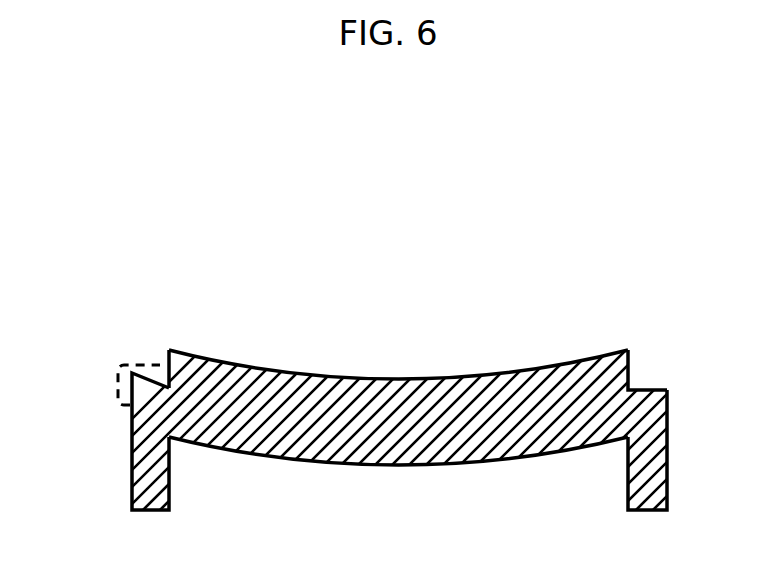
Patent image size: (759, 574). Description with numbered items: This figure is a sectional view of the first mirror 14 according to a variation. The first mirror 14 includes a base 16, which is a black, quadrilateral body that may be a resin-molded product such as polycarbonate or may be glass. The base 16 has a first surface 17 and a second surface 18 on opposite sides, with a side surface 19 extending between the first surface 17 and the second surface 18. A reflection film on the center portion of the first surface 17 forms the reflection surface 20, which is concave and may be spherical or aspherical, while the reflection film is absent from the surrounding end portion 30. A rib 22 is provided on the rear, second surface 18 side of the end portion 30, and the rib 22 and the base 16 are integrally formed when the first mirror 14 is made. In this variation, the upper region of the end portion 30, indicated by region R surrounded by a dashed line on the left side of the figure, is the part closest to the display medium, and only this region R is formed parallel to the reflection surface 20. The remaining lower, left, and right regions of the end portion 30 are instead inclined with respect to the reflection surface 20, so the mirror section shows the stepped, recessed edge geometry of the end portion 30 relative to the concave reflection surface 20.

The first mirror 14 is at (688, 215).
The base 16 is at (607, 410).
The first surface 17 is at (178, 351).
The second surface 18 is at (255, 456).
The side surface 19 is at (131, 453).
The reflection surface 20 is at (557, 366).
The rib 22 is at (667, 493).
The end portion 30 is at (630, 389).
The region R is at (127, 365).